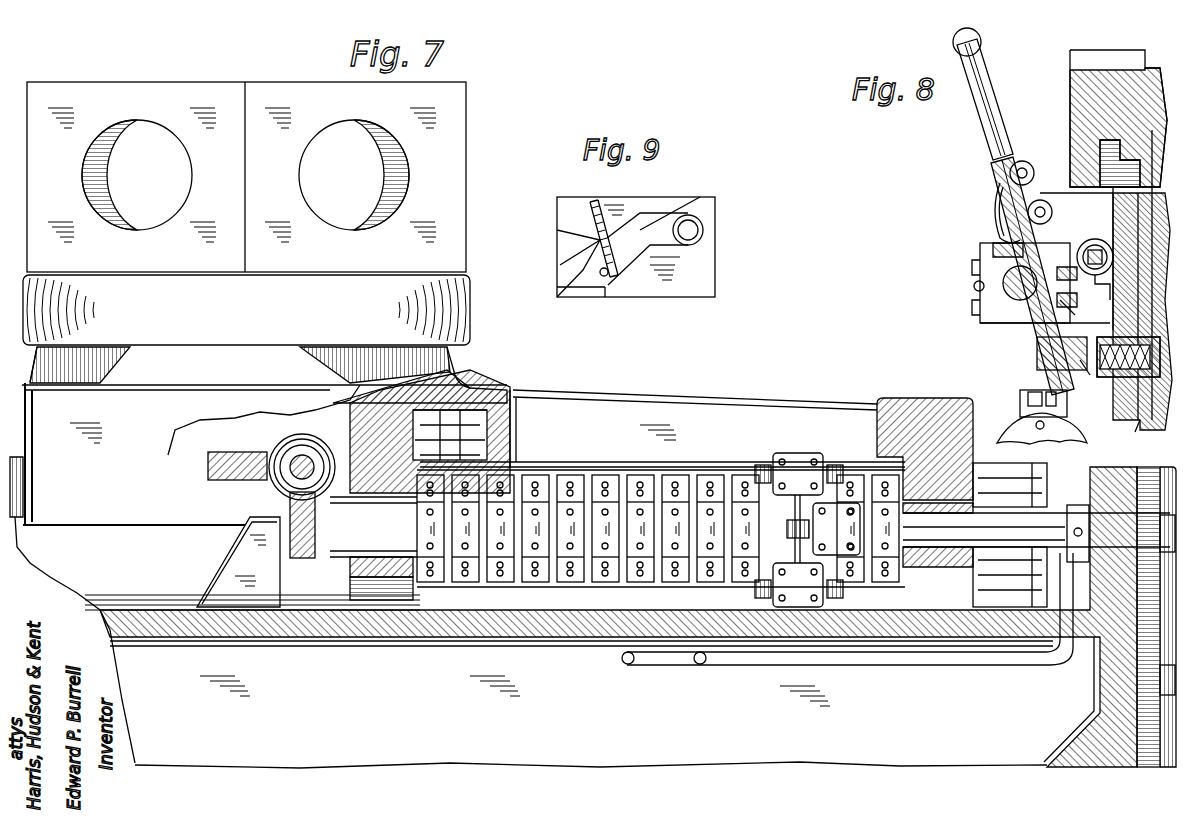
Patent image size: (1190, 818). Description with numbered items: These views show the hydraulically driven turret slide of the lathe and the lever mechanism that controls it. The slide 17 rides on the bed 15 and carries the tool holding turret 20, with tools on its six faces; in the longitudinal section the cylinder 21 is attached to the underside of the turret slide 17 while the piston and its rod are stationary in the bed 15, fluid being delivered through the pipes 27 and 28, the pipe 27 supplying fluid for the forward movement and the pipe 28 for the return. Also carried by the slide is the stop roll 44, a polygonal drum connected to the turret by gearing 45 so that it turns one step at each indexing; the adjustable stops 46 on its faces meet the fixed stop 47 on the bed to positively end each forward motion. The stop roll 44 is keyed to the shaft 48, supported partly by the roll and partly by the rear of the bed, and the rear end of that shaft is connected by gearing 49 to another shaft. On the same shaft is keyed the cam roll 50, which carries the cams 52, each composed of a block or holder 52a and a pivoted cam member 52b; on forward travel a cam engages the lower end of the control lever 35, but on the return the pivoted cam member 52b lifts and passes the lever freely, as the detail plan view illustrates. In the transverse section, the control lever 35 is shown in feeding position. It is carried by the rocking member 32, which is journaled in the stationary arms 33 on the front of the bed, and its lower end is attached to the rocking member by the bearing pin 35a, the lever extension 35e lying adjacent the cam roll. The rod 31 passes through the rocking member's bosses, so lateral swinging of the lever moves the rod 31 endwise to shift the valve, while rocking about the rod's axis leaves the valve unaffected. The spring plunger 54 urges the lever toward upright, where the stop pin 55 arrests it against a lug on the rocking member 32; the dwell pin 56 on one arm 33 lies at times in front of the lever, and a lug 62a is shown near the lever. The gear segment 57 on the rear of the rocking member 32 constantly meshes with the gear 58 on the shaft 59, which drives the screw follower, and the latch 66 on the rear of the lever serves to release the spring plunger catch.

In FIG. 7, the bed 15 is at (428, 622).
In FIG. 8, the bed 15 is at (1148, 420).
In FIG. 7, the turret slide 17 is at (705, 413).
In FIG. 8, the turret slide 17 is at (1070, 60).
In FIG. 7, the tool holding turret 20 is at (448, 127).
In FIG. 7, the cylinder 21 is at (1010, 478).
In FIG. 7, the pipe 27 is at (702, 664).
In FIG. 7, the pipe 28 is at (627, 664).
In FIG. 8, the rod 31 is at (985, 270).
In FIG. 8, the rocking member 32 is at (1015, 310).
In FIG. 8, the arms 33 is at (998, 215).
In FIG. 8, the control lever 35 is at (960, 132).
In FIG. 8, the bearing pin 35a is at (1035, 355).
In FIG. 8, the lever extension 35e is at (1080, 378).
In FIG. 7, the stop roll 44 is at (567, 475).
In FIG. 7, the gearing 45 is at (300, 558).
In FIG. 7, the stops 46 is at (795, 462).
In FIG. 7, the fixed stop 47 is at (232, 560).
In FIG. 7, the shaft 48 is at (1039, 533).
In FIG. 7, the gearing 49 is at (848, 629).
In FIG. 8, the cam roll 50 is at (1080, 432).
In FIG. 8, the cams 52 is at (1022, 400).
In FIG. 9, the block or holder 52a is at (700, 275).
In FIG. 9, the pivoted cam member 52b is at (655, 217).
In FIG. 8, the spring plunger 54 is at (1100, 377).
In FIG. 8, the stop pin 55 is at (974, 288).
In FIG. 8, the dwell pin 56 is at (1022, 161).
In FIG. 8, the gear segment 57 is at (1087, 242).
In FIG. 8, the gear 58 is at (1099, 292).
In FIG. 8, the shaft 59 is at (1160, 235).
In FIG. 8, the lug 62a is at (1082, 312).
In FIG. 8, the latch 66 is at (1045, 200).